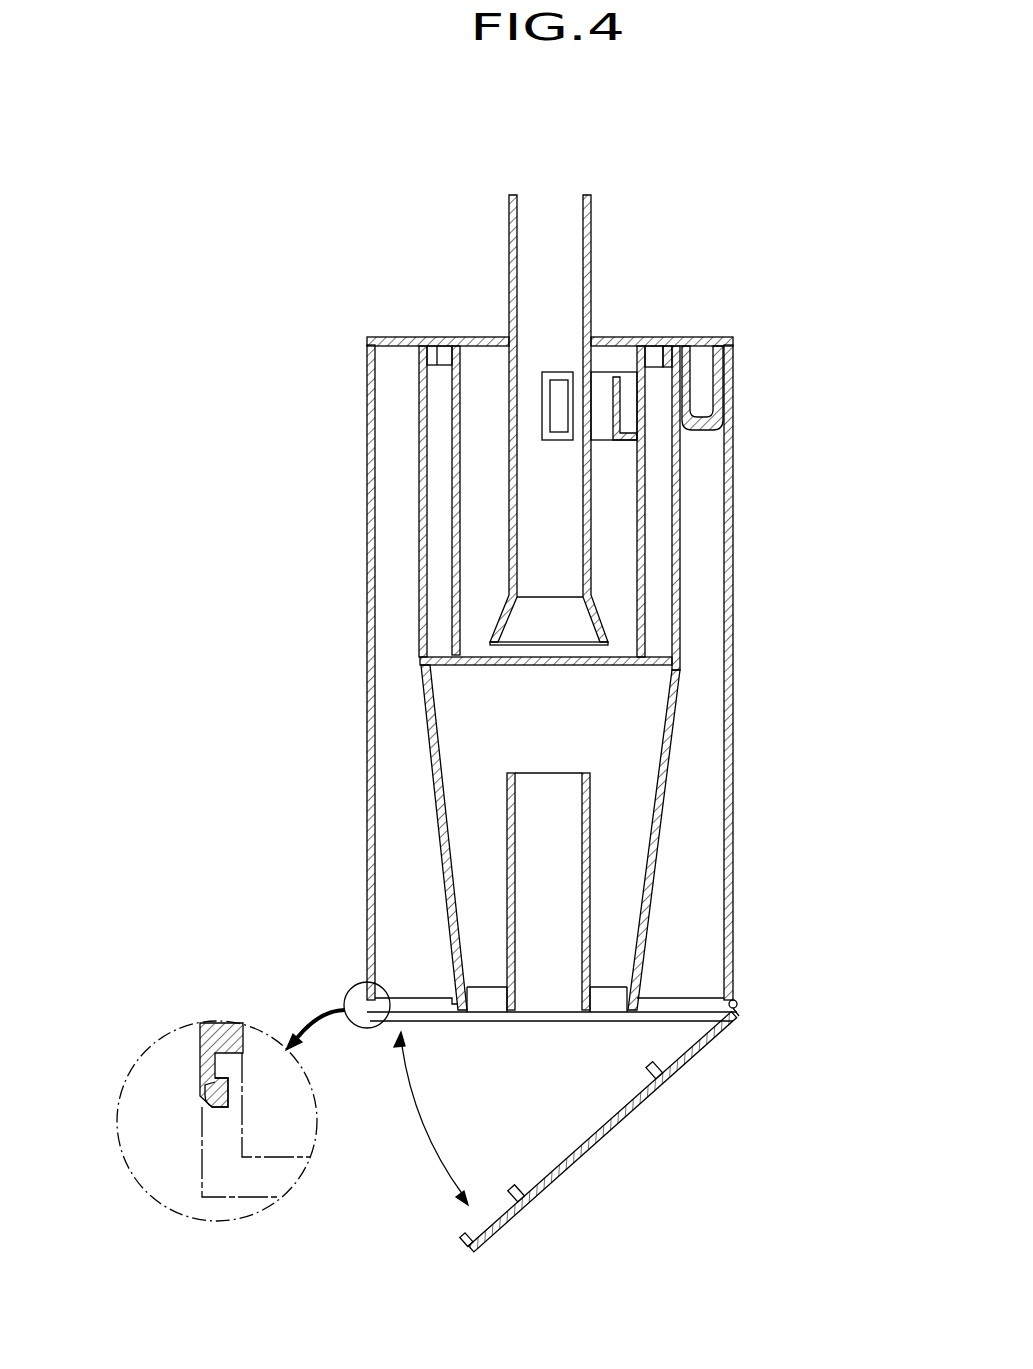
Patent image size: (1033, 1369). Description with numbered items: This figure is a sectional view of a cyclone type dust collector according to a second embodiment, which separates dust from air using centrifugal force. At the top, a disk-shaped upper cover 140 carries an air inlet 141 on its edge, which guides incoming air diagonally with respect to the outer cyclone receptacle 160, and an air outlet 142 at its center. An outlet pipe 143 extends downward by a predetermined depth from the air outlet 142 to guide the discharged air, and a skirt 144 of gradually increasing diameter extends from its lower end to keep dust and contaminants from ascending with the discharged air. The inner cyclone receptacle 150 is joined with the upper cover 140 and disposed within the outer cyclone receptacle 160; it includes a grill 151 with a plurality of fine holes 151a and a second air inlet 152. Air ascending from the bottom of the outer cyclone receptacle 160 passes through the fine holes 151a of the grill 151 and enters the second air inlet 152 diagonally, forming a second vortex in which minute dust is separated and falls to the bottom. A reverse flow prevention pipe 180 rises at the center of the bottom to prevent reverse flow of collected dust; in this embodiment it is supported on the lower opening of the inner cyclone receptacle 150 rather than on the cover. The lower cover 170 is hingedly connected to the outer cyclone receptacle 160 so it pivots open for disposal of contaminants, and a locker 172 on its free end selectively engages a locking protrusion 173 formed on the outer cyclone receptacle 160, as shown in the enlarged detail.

The upper cover 140 is at (410, 320).
The air inlet 141 is at (703, 380).
The air outlet 142 is at (584, 250).
The outlet pipe 143 is at (508, 487).
The skirt 144 is at (500, 620).
The inner cyclone receptacle 150 is at (698, 700).
The grill 151 is at (657, 613).
The fine holes 151a is at (680, 578).
The second air inlet 152 is at (630, 392).
The outer cyclone receptacle 160 is at (744, 780).
The lower cover 170 is at (622, 1140).
The locker 172 is at (232, 1068).
The locking protrusion 173 is at (210, 1088).
The reverse flow prevention pipe 180 is at (508, 853).